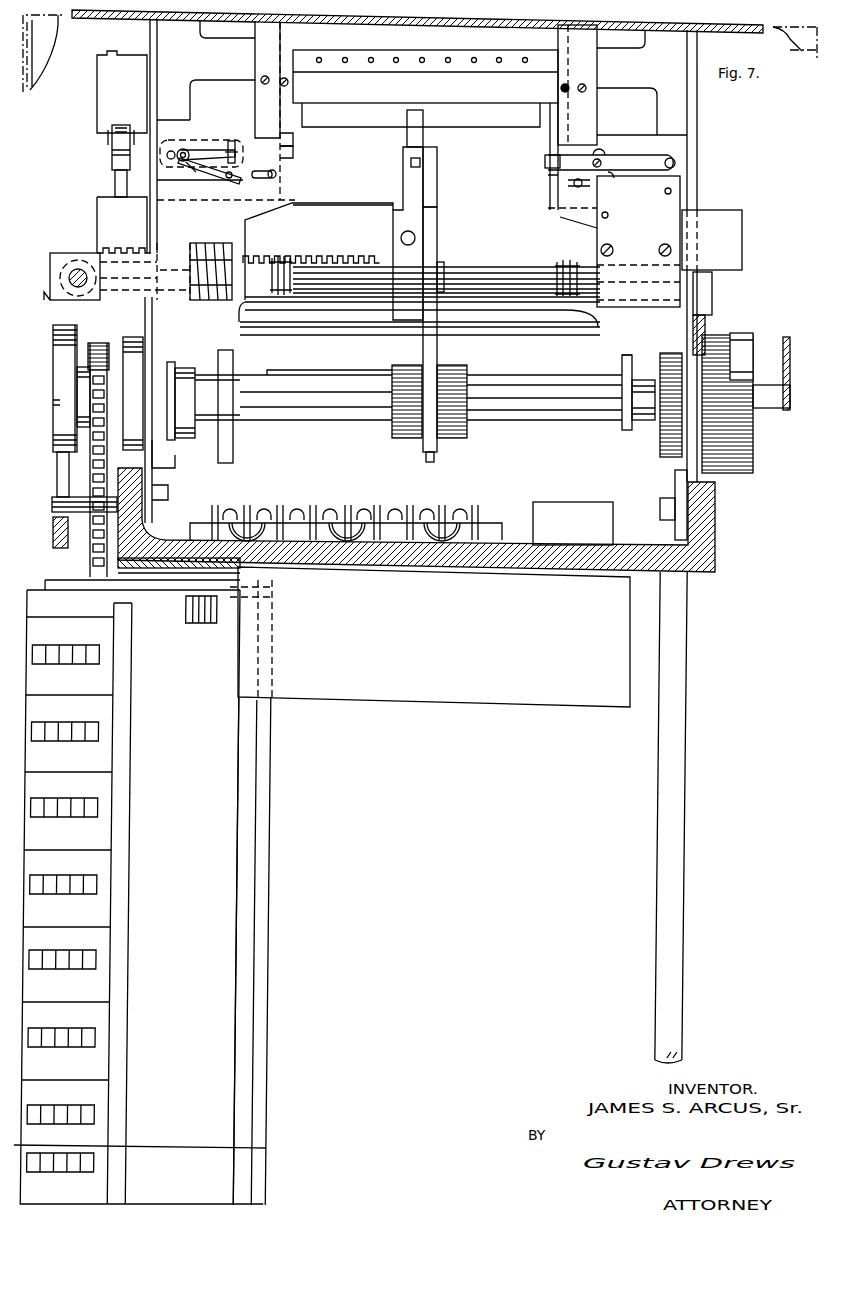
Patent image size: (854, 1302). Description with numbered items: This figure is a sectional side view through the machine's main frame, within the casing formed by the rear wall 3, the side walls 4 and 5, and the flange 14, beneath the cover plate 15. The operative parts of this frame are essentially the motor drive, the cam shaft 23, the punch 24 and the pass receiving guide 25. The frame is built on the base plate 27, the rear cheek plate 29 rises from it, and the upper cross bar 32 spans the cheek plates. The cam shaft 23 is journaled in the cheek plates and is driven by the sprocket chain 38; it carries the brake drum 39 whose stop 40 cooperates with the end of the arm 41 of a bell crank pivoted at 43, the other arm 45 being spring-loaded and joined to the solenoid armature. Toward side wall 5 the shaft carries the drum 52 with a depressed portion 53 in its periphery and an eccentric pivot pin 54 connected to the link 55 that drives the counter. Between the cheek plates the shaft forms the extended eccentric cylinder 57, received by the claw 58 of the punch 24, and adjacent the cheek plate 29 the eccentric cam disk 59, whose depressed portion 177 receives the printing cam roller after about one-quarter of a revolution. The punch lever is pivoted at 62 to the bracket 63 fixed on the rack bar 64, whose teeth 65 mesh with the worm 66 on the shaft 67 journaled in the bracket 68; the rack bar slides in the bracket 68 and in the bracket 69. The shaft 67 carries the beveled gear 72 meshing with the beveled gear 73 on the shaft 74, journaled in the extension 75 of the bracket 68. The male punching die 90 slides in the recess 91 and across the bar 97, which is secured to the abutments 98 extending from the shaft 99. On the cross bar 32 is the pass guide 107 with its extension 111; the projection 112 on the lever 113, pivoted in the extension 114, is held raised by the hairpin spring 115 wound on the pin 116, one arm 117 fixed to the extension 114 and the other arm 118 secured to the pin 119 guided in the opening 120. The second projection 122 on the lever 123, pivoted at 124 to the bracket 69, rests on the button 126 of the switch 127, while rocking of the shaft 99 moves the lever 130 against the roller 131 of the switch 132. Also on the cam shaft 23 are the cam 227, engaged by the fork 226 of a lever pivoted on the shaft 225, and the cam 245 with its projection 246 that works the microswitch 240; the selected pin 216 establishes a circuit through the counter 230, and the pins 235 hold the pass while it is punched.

The rear wall 3 is at (35, 50).
The side wall 4 is at (42, 33).
The side wall 5 is at (785, 46).
The flange 14 is at (480, 660).
The cover plate 15 is at (467, 20).
The cam shaft 23 is at (258, 376).
The punch 24 is at (448, 357).
The pass receiving guide 25 is at (597, 110).
The base plate 27 is at (513, 540).
The rear cheek plate 29 is at (680, 468).
The upper cross bar 32 is at (228, 68).
The sprocket chain 38 is at (94, 343).
The brake drum 39 is at (58, 343).
The stop 40 is at (56, 380).
The arm 41 is at (55, 412).
The pivot 43 is at (52, 502).
The arm 45 is at (53, 533).
The drum 52 is at (745, 333).
The depressed portion 53 is at (750, 378).
The pivot pin 54 is at (775, 410).
The link 55 is at (790, 360).
The extended eccentric cylinder 57 is at (550, 422).
The claw 58 is at (431, 453).
The eccentric cam disk 59 is at (622, 367).
The pivot 62 is at (442, 265).
The bracket 63 is at (406, 187).
The rack bar 64 is at (322, 215).
The teeth 65 is at (310, 256).
The worm 66 is at (205, 300).
The shaft 67 is at (172, 262).
The bracket 68 is at (248, 223).
The bracket 69 is at (647, 140).
The beveled gear 72 is at (90, 262).
The beveled gear 73 is at (70, 257).
The shaft 74 is at (77, 287).
The extension 75 is at (52, 296).
The male punching die 90 is at (438, 162).
The recess 91 is at (410, 162).
The bar 97 is at (470, 270).
The abutments 98 is at (560, 265).
The shaft 99 is at (492, 285).
The pass guide 107 is at (537, 52).
The extension 111 is at (597, 69).
The projection 112 is at (293, 158).
The lever 113 is at (293, 141).
The extension 114 is at (186, 128).
The hairpin spring 115 is at (190, 172).
The pin 116 is at (181, 150).
The arm 117 is at (205, 175).
The arm 118 is at (206, 148).
The pin 119 is at (231, 140).
The opening 120 is at (248, 178).
The second projection 122 is at (545, 166).
The lever 123 is at (639, 161).
The pivot 124 is at (668, 158).
The button 126 is at (610, 180).
The switch 127 is at (690, 212).
The lever 130 is at (113, 183).
The roller 131 is at (110, 150).
The switch 132 is at (100, 92).
The depressed portion 177 is at (622, 400).
The pins 216 is at (473, 63).
The shaft 225 is at (370, 330).
The fork 226 is at (240, 328).
The cam 227 is at (238, 430).
The counter 230 is at (102, 786).
The pins 235 is at (561, 91).
The microswitch 240 is at (170, 456).
The cam 245 is at (185, 430).
The projection 246 is at (172, 362).